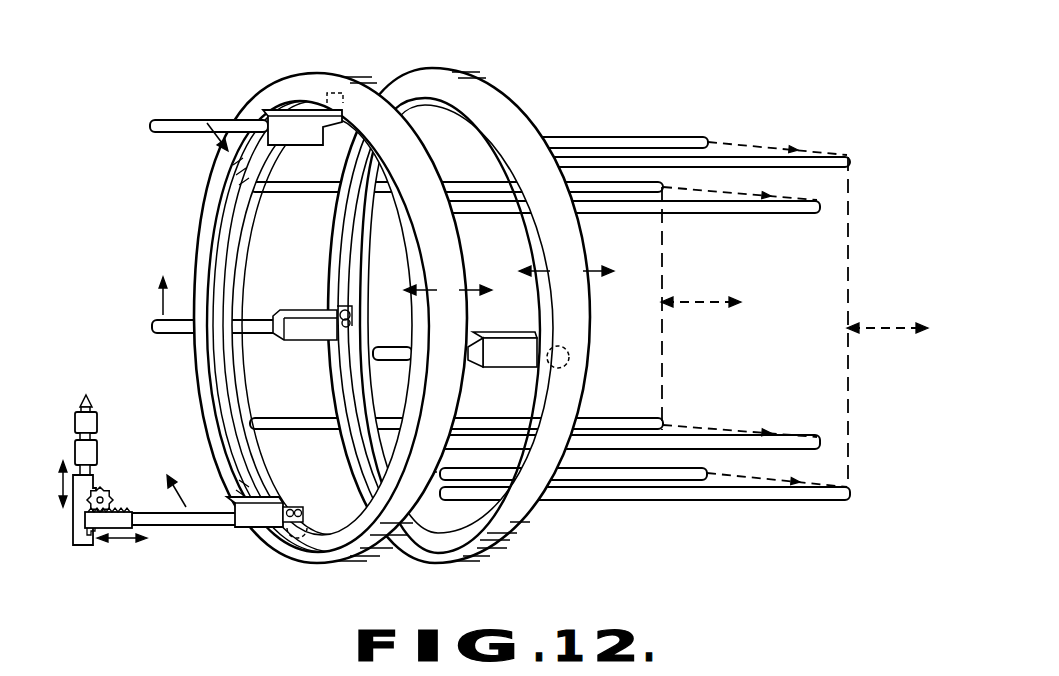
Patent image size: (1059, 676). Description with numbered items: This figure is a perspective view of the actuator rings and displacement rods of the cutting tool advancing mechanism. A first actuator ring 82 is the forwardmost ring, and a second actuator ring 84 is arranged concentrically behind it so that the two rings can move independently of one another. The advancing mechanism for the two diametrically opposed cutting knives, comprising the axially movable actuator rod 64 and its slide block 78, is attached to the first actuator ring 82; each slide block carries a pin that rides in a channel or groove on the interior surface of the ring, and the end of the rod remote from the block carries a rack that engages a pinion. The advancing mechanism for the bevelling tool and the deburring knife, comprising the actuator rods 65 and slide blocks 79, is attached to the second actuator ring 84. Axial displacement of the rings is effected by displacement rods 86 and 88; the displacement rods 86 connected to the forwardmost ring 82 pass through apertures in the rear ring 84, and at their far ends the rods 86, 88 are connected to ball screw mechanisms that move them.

The actuator rod 64 is at (180, 117).
The actuator rod 65 is at (178, 334).
The slide block 78 is at (284, 110).
The slide block 79 is at (294, 311).
The first actuator ring 82 is at (306, 78).
The second actuator ring 84 is at (494, 88).
The displacement rod 86 is at (630, 186).
The displacement rod 88 is at (652, 165).